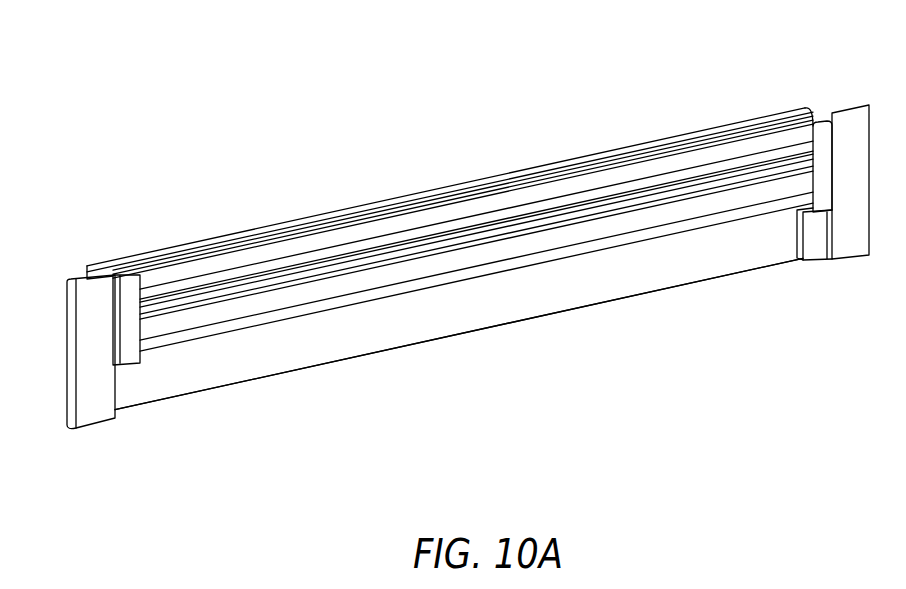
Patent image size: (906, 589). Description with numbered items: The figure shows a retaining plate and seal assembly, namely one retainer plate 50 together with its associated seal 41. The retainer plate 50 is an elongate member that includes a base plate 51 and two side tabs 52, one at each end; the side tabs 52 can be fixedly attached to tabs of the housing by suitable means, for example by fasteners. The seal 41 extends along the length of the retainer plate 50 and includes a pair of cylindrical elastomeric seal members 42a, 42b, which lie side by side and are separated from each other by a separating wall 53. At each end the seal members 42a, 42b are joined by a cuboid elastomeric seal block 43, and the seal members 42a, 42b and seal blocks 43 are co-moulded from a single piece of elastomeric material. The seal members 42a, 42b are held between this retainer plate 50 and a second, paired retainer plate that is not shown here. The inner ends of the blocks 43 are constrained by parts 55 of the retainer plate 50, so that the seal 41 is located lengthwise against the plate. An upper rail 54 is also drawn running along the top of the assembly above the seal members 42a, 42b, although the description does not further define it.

The seal 41 is at (295, 232).
The seal member 42a is at (232, 310).
The seal member 42b is at (543, 198).
The seal block 43 is at (130, 318).
The retainer plate 50 is at (343, 385).
The base plate 51 is at (528, 295).
The side tab 52 is at (93, 297).
The separating wall 53 is at (763, 170).
The top rail 54 is at (440, 190).
The part 55 is at (801, 212).